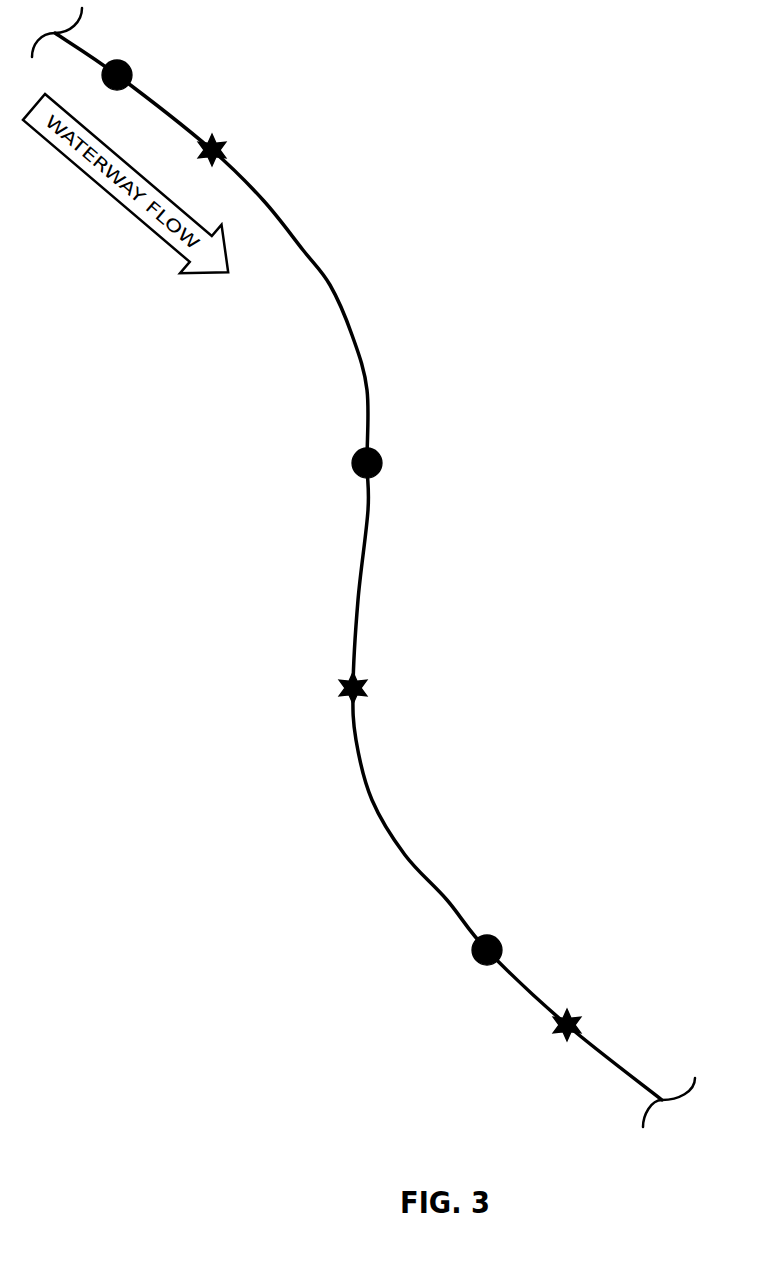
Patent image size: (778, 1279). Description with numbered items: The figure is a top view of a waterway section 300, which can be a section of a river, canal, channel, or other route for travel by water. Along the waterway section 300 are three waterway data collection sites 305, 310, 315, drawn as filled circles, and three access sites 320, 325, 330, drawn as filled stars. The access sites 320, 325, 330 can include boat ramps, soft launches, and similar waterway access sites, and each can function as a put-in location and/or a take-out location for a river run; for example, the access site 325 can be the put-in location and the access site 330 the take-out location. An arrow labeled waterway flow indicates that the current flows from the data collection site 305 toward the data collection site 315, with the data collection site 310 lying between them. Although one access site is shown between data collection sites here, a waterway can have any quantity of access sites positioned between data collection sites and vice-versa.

The waterway section 300 is at (340, 296).
The data collection site 305 is at (132, 68).
The data collection site 310 is at (380, 460).
The data collection site 315 is at (500, 947).
The access site 320 is at (225, 145).
The access site 325 is at (365, 690).
The access site 330 is at (580, 1020).